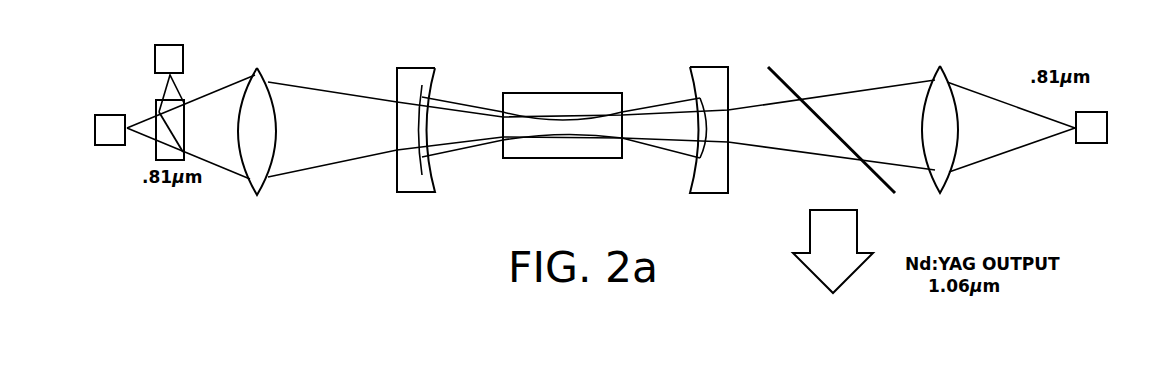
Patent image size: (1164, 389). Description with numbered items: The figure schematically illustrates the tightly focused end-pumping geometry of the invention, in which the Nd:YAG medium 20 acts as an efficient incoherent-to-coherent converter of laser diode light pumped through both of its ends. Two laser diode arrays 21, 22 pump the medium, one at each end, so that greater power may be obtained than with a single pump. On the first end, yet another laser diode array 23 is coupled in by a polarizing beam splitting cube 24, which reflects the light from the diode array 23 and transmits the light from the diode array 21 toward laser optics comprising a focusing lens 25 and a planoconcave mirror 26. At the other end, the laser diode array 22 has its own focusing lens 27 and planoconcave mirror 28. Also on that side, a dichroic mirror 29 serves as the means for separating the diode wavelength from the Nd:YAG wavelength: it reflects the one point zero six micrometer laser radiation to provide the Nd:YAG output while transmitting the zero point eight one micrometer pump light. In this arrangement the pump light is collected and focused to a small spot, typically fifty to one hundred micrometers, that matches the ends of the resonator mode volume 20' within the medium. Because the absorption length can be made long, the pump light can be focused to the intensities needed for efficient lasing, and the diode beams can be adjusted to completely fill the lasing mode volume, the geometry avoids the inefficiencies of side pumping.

The Nd:YAG medium 20 is at (562, 126).
The resonator mode volume 20' is at (585, 94).
The laser diode array 21 is at (100, 148).
The laser diode array 22 is at (1110, 132).
The laser diode array 23 is at (155, 52).
The polarizing beam splitting cube 24 is at (185, 98).
The focusing lens 25 is at (262, 80).
The planoconcave mirror 26 is at (397, 78).
The focusing lens 27 is at (935, 72).
The planoconcave mirror 28 is at (692, 80).
The dichroic mirror 29 is at (795, 85).